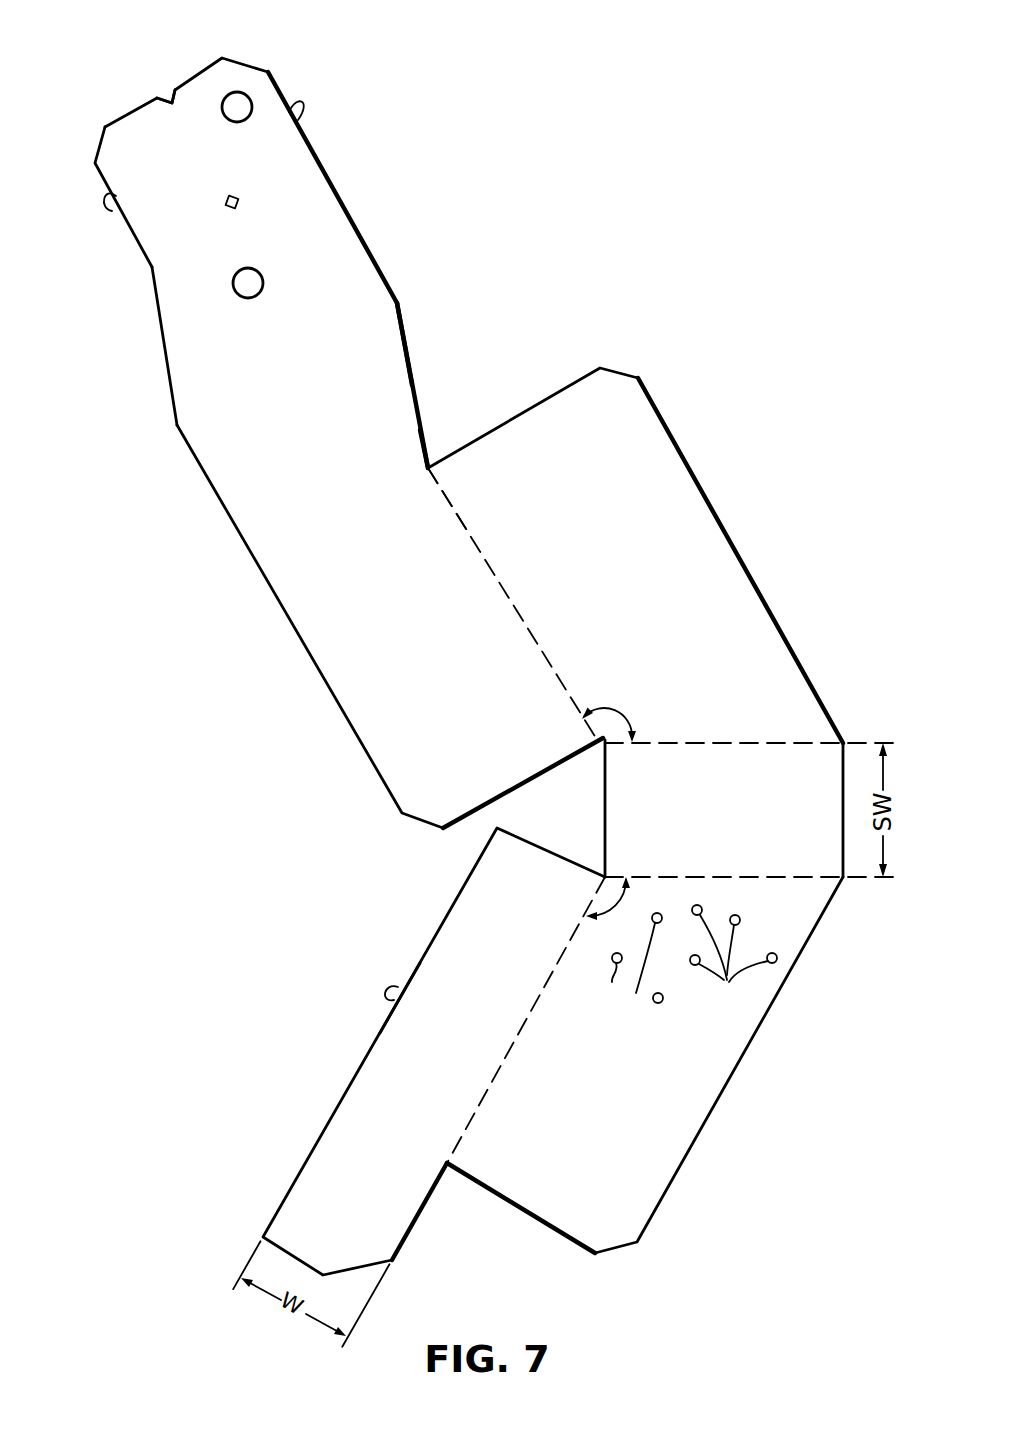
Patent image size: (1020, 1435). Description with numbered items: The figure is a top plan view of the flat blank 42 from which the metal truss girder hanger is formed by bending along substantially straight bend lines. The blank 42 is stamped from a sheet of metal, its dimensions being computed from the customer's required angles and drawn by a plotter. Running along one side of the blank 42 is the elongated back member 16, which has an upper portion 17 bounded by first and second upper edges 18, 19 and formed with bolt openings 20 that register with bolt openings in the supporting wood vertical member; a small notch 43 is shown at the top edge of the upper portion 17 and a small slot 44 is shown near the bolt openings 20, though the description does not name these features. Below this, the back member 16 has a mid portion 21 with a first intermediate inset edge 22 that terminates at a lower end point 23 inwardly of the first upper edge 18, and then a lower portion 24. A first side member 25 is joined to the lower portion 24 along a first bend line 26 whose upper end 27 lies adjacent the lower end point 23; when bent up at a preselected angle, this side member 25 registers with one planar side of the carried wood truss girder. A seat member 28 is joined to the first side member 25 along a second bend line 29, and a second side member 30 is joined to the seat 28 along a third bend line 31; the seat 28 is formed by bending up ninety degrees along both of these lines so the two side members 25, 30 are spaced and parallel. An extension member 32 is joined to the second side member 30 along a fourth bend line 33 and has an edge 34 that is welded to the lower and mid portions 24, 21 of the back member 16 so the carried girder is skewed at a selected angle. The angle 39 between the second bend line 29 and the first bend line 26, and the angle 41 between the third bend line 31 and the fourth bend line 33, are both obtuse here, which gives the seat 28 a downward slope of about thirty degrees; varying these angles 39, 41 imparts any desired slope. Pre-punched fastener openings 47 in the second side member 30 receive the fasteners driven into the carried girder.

The elongated back member 16 is at (105, 122).
The upper portion 17 is at (158, 197).
The first upper edge 18 is at (292, 126).
The second upper edge 19 is at (118, 197).
The bolt openings 20 is at (237, 110).
The mid portion 21 is at (208, 379).
The first intermediate inset edge 22 is at (408, 347).
The lower end point 23 is at (430, 462).
The lower portion 24 is at (366, 679).
The first side member 25 is at (618, 567).
The first bend line 26 is at (480, 537).
The upper end 27 is at (448, 462).
The seat member 28 is at (721, 826).
The second bend line 29 is at (797, 740).
The second side member 30 is at (619, 1111).
The third bend line 31 is at (779, 877).
The extension member 32 is at (503, 917).
The fourth bend line 33 is at (527, 1028).
The edge 34 is at (395, 990).
The angle 39 is at (613, 706).
The angle 41 is at (606, 926).
The blank 42 is at (465, 167).
The notch 43 is at (175, 90).
The tab slot 44 is at (232, 208).
The fastener openings 47 is at (653, 998).